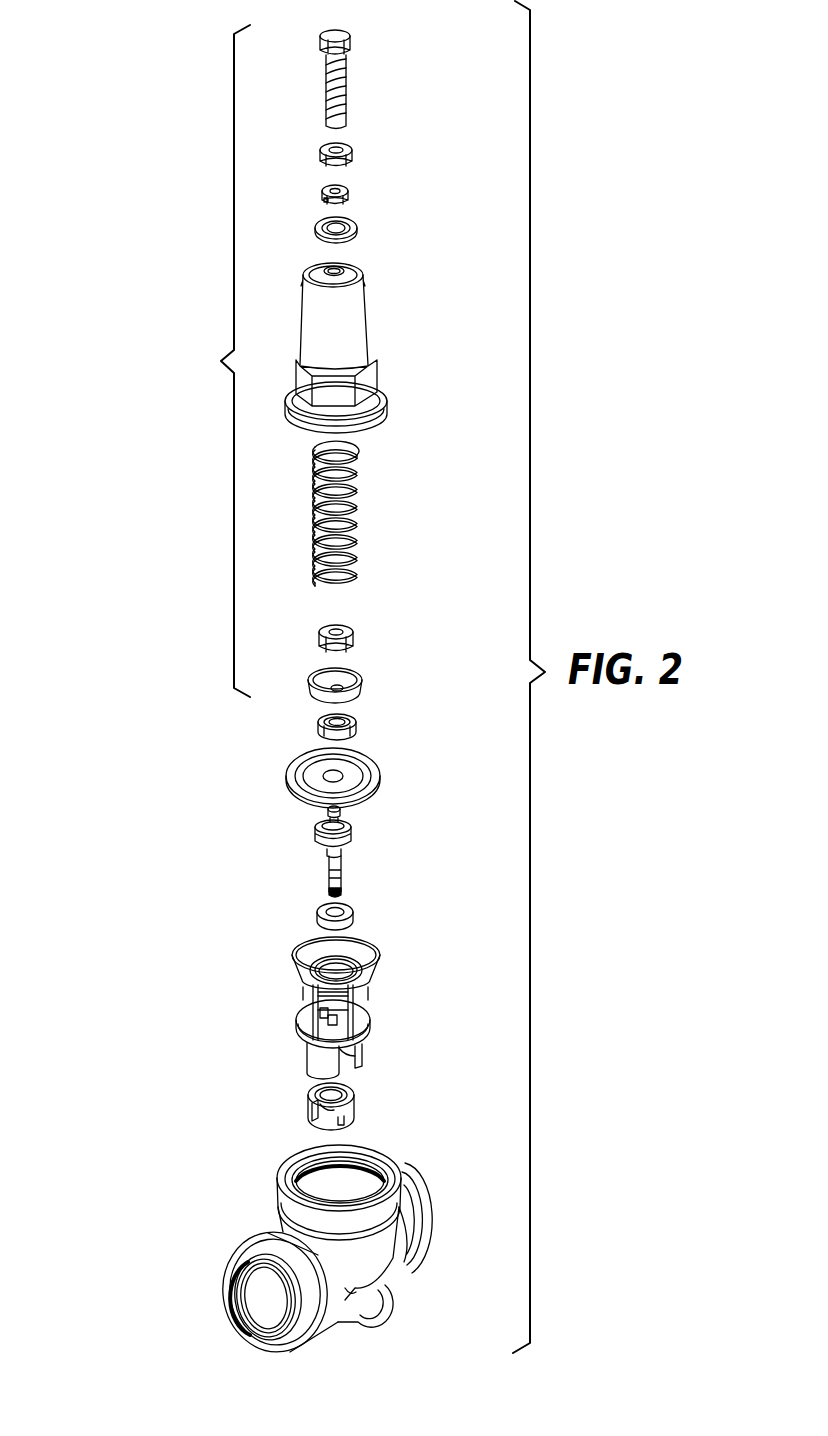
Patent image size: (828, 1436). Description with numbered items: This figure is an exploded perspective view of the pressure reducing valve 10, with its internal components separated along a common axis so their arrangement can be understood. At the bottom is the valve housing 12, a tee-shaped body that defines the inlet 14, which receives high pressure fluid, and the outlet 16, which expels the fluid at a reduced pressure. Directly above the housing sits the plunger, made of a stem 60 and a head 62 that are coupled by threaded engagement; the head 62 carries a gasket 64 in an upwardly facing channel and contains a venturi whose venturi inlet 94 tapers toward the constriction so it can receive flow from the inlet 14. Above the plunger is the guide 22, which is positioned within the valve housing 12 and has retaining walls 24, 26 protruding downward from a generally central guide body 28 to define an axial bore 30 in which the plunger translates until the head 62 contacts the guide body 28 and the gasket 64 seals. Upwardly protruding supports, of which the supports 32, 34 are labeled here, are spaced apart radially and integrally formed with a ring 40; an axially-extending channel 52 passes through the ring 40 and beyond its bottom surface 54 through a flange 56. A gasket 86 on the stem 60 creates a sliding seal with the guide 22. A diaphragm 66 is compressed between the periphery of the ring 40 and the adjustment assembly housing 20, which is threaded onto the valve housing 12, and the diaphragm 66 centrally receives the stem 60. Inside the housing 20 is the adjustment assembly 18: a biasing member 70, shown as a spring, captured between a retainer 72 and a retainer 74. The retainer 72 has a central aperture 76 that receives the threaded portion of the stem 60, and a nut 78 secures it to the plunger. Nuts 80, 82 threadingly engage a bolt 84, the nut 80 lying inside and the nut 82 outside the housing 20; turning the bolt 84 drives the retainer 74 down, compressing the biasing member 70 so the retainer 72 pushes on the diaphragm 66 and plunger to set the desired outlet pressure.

The pressure reducing valve 10 is at (140, 228).
The valve housing 12 is at (398, 1268).
The inlet 14 is at (230, 1313).
The outlet 16 is at (452, 1197).
The adjustment assembly 18 is at (312, 364).
The adjustment assembly housing 20 is at (362, 326).
The guide 22 is at (276, 1001).
The retaining wall 24 is at (313, 1058).
The retaining wall 26 is at (366, 1048).
The guide body 28 is at (364, 1000).
The axial bore 30 is at (350, 1056).
The support 32 is at (310, 1039).
The support 34 is at (354, 1010).
The ring 40 is at (313, 952).
The axially-extending channel 52 is at (338, 972).
The bottom surface 54 is at (320, 1013).
The flange 56 is at (345, 1020).
The stem 60 is at (343, 872).
The head 62 is at (347, 1108).
The gasket 64 is at (355, 915).
The diaphragm 66 is at (378, 777).
The biasing member 70 is at (355, 542).
The retainer 72 is at (361, 693).
The retainer 74 is at (357, 228).
The central aperture 76 is at (341, 686).
The nut 78 is at (353, 633).
The nut 80 is at (349, 194).
The nut 82 is at (353, 155).
The bolt 84 is at (361, 92).
The gasket 86 is at (318, 727).
The venturi inlet 94 is at (312, 1127).